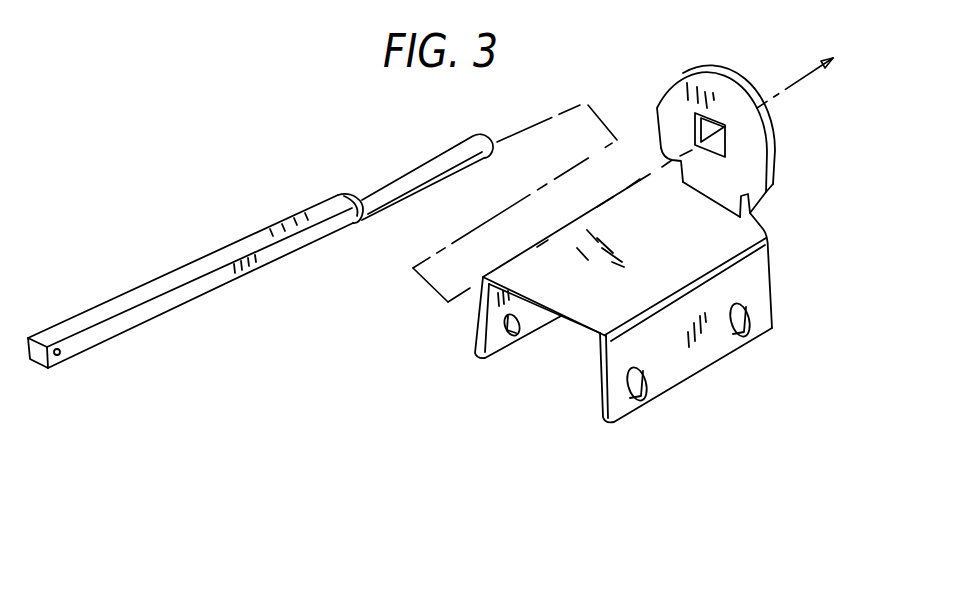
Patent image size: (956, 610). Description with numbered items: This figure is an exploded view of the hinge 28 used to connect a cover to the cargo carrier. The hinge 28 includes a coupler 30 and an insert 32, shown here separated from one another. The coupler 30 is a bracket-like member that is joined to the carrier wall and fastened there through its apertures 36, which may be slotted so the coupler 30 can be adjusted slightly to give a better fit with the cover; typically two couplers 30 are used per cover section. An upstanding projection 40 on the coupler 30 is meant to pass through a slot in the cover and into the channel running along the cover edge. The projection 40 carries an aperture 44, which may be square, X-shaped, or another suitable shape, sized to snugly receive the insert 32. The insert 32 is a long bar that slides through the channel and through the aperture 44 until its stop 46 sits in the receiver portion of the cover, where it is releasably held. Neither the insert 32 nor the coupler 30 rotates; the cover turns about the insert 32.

The hinge 28 is at (260, 275).
The coupler 30 is at (653, 237).
The insert 32 is at (147, 322).
The apertures 36 is at (752, 318).
The projections 40 is at (739, 108).
The apertures 44 is at (725, 137).
The stop 46 is at (60, 354).